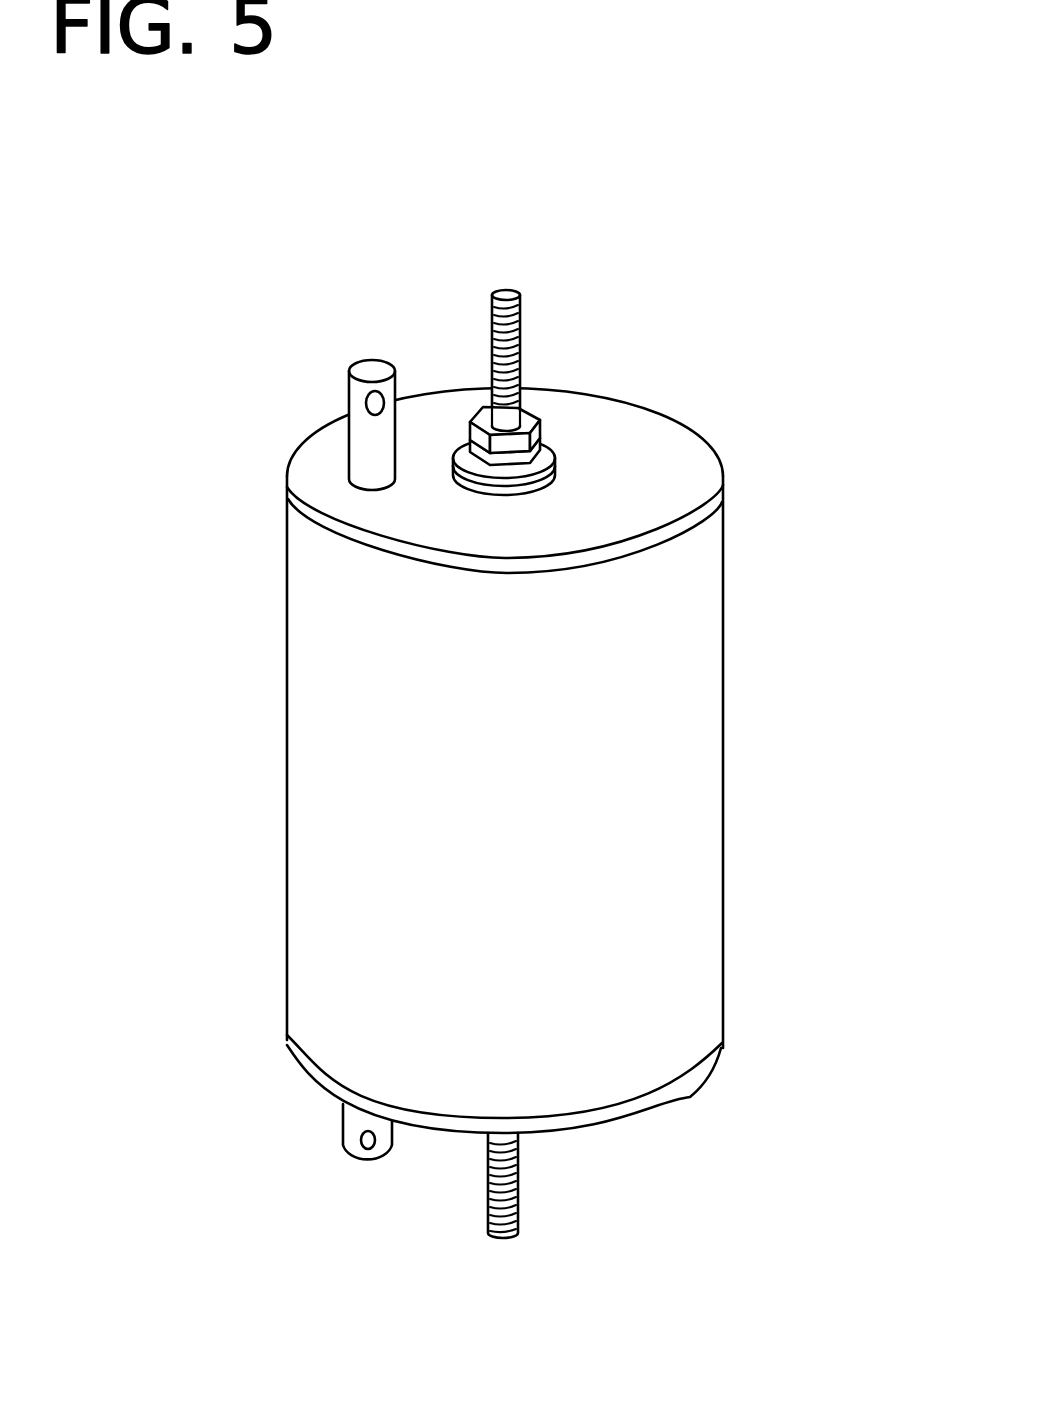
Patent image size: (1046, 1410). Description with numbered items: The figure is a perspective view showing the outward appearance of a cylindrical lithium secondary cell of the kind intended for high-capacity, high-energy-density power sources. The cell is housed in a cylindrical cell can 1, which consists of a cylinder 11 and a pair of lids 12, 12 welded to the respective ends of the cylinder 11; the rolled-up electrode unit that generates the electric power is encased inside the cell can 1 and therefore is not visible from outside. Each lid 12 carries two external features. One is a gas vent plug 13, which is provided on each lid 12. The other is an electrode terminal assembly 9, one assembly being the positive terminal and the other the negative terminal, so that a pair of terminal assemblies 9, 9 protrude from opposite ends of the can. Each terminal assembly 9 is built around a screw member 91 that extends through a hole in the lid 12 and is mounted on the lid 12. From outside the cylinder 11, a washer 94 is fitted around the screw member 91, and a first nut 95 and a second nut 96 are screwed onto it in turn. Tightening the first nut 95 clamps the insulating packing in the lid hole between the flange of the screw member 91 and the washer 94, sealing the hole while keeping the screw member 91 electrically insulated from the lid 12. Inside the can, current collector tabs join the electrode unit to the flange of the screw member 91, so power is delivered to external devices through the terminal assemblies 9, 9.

The cell can 1 is at (591, 760).
The cylinder 11 is at (703, 733).
The lid 12 is at (700, 483).
The gas vent plug 13 is at (350, 395).
The electrode terminal assembly 9 is at (553, 745).
The screw member 91 is at (520, 323).
The washer 94 is at (457, 437).
The first nut 95 is at (550, 443).
The second nut 96 is at (545, 425).